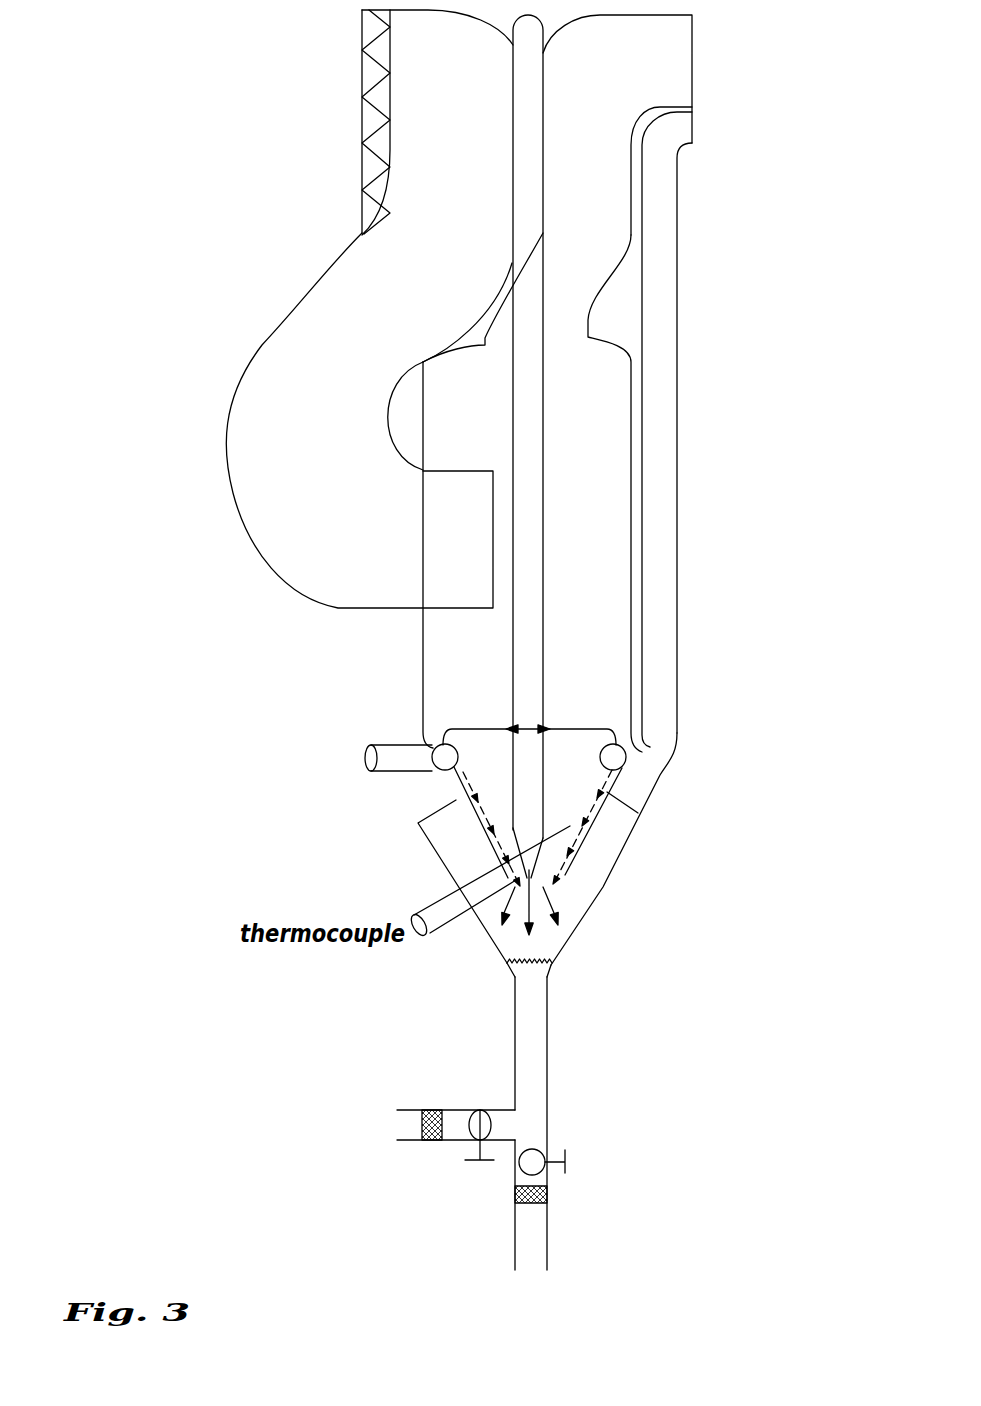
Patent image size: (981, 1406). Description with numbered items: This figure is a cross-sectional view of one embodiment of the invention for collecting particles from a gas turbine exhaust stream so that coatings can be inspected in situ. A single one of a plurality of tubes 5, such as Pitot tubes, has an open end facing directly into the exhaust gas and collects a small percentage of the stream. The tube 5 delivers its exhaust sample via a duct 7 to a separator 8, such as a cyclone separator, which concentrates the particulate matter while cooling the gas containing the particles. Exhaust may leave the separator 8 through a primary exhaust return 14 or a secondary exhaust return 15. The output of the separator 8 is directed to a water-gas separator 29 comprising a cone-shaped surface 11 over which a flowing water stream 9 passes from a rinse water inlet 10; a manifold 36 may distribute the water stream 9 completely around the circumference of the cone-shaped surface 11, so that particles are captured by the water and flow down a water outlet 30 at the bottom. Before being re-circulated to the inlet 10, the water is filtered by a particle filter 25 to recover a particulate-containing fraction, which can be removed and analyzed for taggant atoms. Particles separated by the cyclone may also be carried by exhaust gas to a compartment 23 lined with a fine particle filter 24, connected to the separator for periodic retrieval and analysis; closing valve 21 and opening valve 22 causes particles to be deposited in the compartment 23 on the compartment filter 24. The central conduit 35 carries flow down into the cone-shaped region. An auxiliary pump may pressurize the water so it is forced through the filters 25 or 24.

The tube 5 is at (352, 82).
The duct 7 is at (275, 411).
The separator 8 is at (613, 537).
The water stream 9 is at (428, 783).
The rinse water inlet 10 is at (352, 755).
The cone-shaped surface 11 is at (458, 828).
The primary exhaust return 14 is at (698, 48).
The secondary exhaust return 15 is at (700, 122).
The valve 21 is at (582, 1157).
The valve 22 is at (484, 1178).
The compartment 23 is at (445, 1145).
The fine particle filter 24 is at (432, 1142).
The particle filter 25 is at (562, 1191).
The water-gas separator 29 is at (626, 877).
The water outlet 30 is at (556, 1037).
The central tube 35 is at (532, 597).
The manifold 36 is at (628, 754).